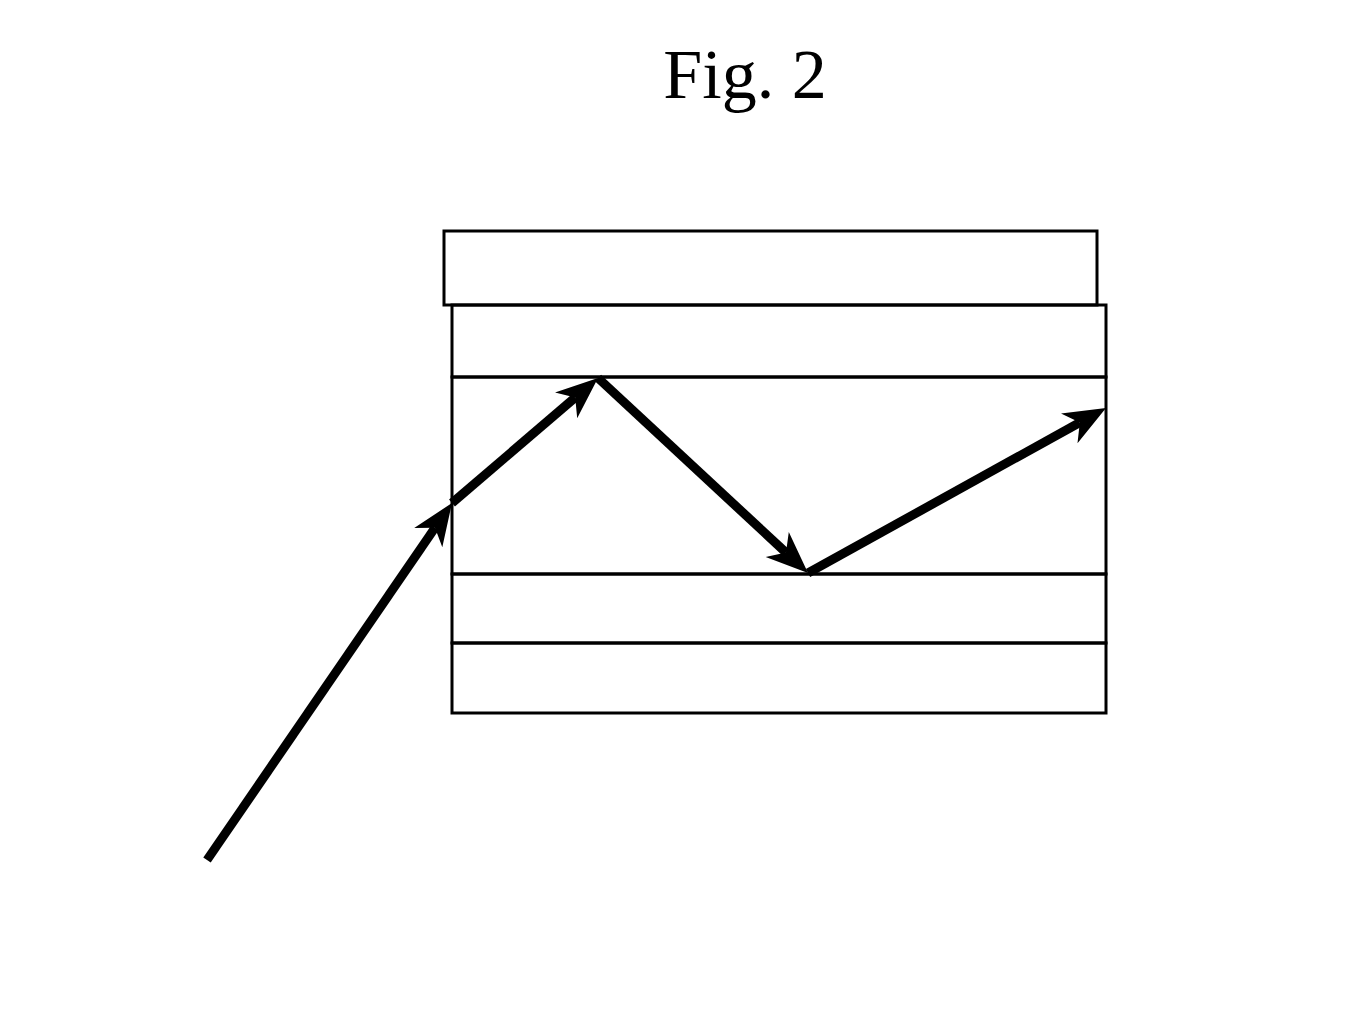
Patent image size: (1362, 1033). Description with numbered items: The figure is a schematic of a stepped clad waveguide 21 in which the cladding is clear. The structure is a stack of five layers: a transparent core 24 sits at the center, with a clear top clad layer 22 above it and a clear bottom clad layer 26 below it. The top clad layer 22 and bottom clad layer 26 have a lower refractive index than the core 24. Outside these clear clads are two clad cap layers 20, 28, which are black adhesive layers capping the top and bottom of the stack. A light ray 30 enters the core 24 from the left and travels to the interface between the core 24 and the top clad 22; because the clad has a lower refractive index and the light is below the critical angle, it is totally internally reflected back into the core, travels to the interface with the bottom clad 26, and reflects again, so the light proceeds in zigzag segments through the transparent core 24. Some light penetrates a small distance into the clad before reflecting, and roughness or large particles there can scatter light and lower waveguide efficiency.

The clad cap layer 20 is at (1070, 228).
The layered structure (waveguide stack) 21 is at (405, 385).
The top clad layer 22 is at (1105, 358).
The transparent core 24 is at (1110, 467).
The bottom clad layer 26 is at (1113, 608).
The clad cap layer 28 is at (1097, 678).
The light ray 30 is at (352, 662).